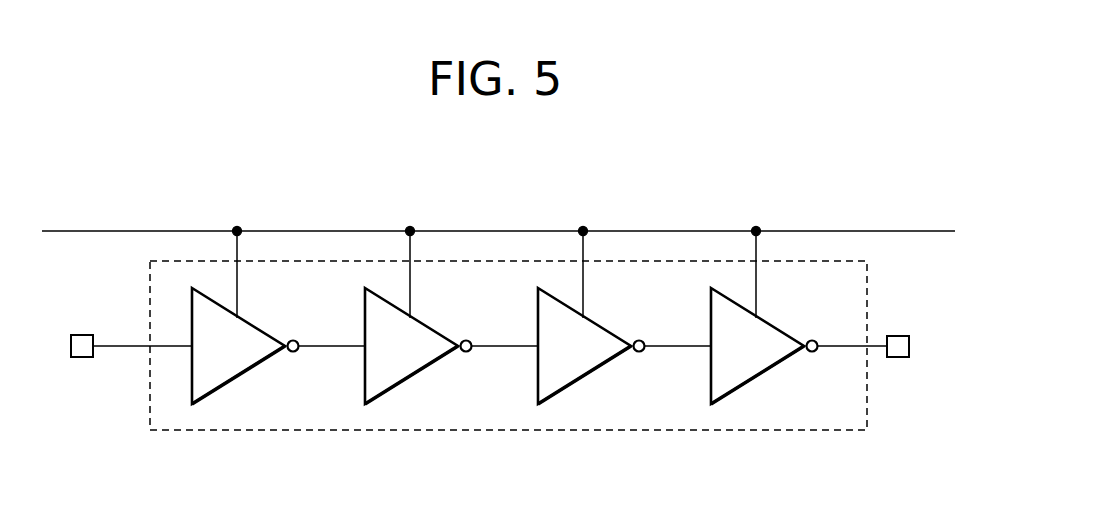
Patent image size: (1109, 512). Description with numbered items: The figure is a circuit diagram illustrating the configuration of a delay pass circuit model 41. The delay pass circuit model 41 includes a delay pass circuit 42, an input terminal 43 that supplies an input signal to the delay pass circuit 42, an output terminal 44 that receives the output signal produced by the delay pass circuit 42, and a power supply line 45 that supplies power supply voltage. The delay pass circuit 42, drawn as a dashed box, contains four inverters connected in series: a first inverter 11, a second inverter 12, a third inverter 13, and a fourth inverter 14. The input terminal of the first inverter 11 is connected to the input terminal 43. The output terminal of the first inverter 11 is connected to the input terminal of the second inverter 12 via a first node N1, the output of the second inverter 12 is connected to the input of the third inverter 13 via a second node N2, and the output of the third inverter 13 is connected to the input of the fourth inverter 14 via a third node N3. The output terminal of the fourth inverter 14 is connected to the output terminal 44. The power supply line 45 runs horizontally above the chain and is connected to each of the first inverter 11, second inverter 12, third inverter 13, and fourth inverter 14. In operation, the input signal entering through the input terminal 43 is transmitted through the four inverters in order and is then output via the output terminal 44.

The delay pass circuit model 41 is at (782, 200).
The delay pass circuit 42 is at (150, 295).
The input terminal 43 is at (82, 360).
The output terminal 44 is at (895, 335).
The power supply line 45 is at (197, 230).
The first inverter 11 is at (233, 383).
The second inverter 12 is at (410, 383).
The third inverter 13 is at (583, 383).
The fourth inverter 14 is at (756, 383).
The first node N1 is at (320, 349).
The second node N2 is at (500, 349).
The third node N3 is at (673, 349).